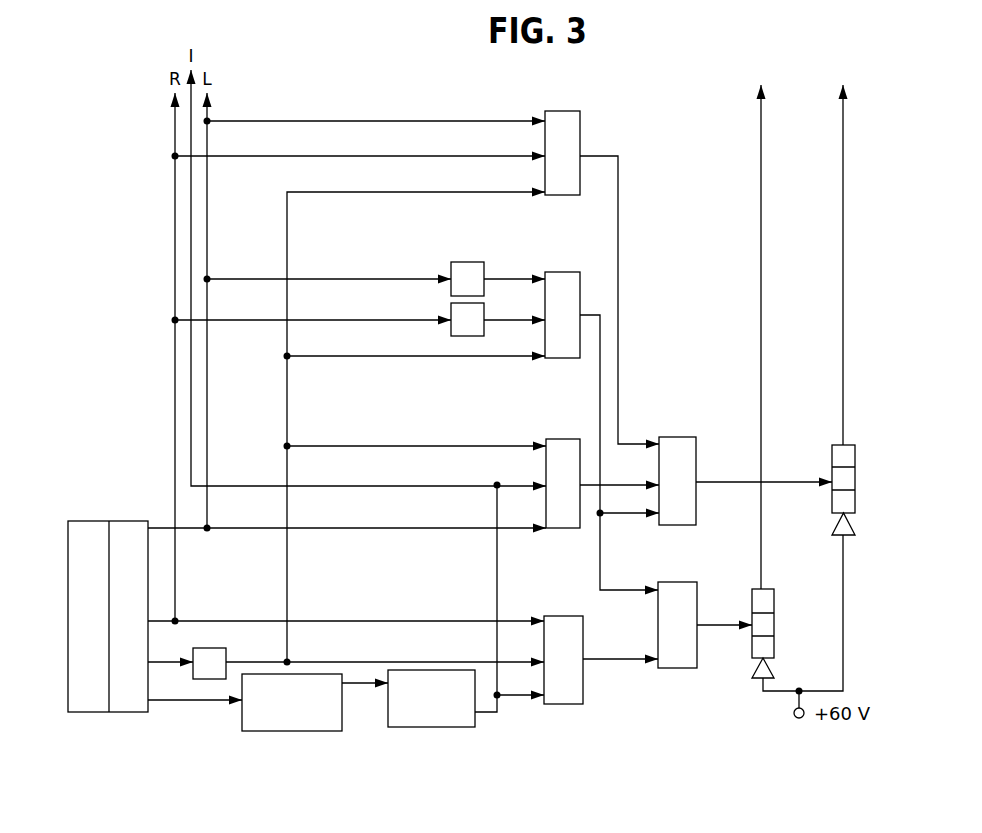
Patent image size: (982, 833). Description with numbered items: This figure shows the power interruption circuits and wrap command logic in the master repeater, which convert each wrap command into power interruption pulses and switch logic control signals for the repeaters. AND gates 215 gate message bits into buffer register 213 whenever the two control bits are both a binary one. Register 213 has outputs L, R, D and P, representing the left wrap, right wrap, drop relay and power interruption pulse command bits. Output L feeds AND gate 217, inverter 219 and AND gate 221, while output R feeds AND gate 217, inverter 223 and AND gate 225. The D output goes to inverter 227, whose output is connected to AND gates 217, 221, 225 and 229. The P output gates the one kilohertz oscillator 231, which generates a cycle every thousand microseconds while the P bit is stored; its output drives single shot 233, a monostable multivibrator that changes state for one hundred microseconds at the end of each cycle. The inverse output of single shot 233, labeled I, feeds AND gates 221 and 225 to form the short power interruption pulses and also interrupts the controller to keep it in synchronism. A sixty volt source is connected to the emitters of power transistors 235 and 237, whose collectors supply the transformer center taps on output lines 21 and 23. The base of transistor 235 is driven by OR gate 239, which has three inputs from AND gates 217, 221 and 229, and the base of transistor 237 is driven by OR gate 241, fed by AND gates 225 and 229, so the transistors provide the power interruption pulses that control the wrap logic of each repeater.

The output line (first output conductor) 21 is at (843, 252).
The output line (second output conductor) 23 is at (761, 248).
The buffer register 213 is at (128, 521).
The AND gates 215 is at (99, 505).
The AND gate 217 is at (581, 121).
The inverter 219 is at (463, 262).
The AND gate 221 is at (569, 425).
The inverter 223 is at (458, 336).
The AND gate 225 is at (584, 630).
The inverter 227 is at (235, 644).
The AND gate 229 is at (581, 287).
The 1 kilohertz oscillator 231 is at (242, 715).
The single shot 233 is at (388, 710).
The power transistor 235 is at (832, 452).
The power transistor 237 is at (774, 614).
The OR gate 239 is at (697, 447).
The OR gate 241 is at (691, 569).